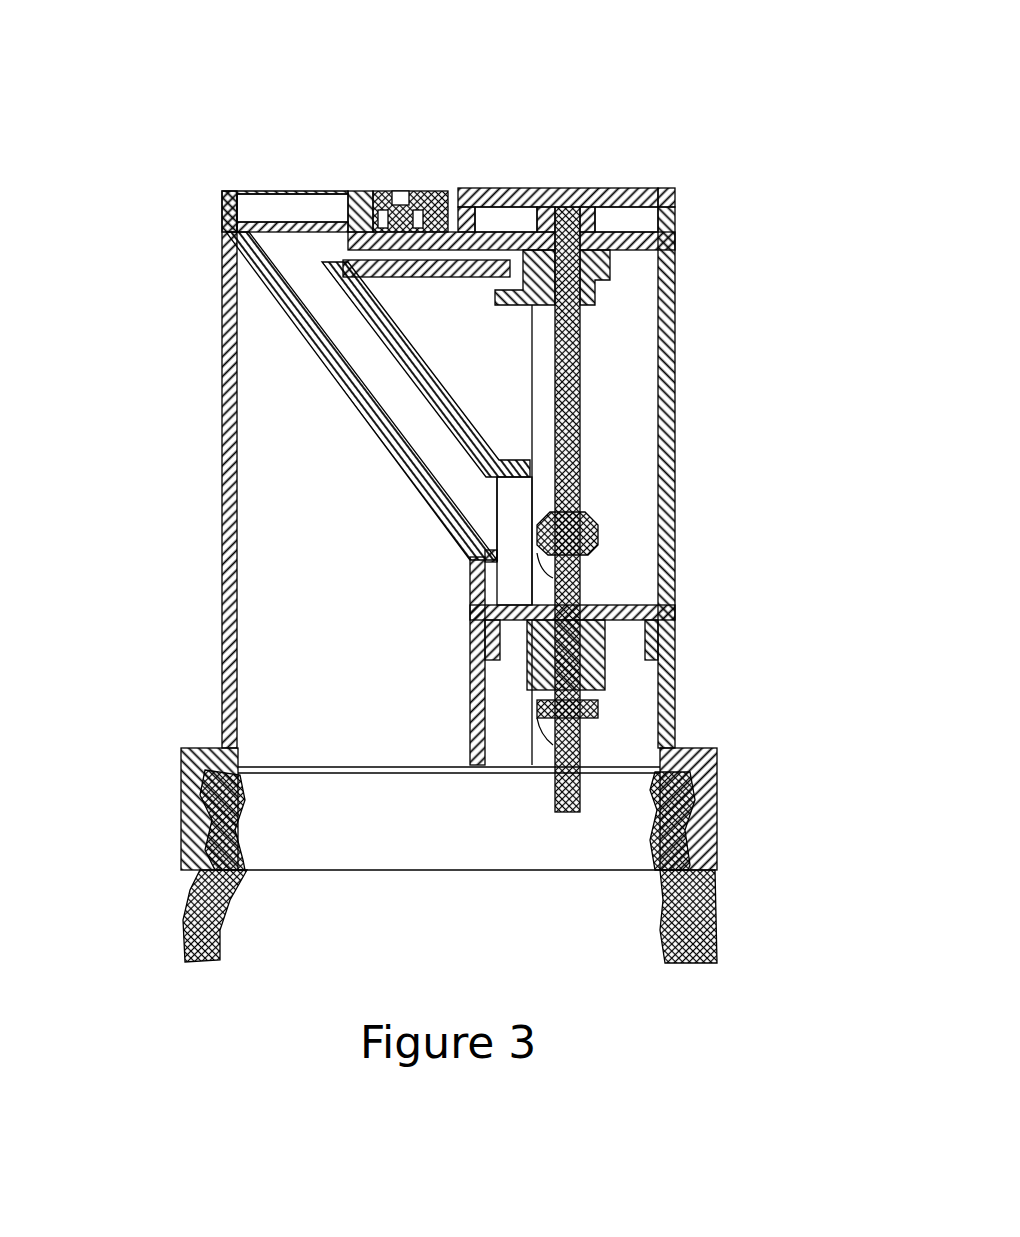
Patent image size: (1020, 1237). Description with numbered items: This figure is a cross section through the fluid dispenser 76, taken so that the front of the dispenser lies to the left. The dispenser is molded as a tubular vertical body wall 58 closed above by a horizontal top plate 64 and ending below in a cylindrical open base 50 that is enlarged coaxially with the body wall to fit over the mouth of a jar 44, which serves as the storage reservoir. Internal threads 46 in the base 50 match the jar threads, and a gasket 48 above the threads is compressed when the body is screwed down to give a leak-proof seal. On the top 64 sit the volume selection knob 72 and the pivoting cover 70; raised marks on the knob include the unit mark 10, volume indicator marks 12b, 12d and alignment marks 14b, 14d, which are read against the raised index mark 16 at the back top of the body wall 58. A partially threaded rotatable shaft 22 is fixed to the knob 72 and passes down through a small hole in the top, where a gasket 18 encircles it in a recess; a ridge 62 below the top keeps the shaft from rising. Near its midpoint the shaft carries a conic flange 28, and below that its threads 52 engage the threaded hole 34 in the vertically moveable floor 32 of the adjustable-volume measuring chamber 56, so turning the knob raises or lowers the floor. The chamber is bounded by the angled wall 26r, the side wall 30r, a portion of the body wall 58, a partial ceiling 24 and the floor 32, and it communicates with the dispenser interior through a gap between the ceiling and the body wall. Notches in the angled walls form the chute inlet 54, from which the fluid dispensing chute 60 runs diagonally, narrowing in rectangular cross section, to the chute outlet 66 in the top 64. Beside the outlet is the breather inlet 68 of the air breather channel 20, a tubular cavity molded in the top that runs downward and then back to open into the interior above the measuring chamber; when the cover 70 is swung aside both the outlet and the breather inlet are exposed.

The raised unit mark 10 is at (517, 188).
The volume indicator mark 12b is at (567, 190).
The volume indicator mark 12d is at (672, 155).
The alignment mark 14b is at (457, 190).
The alignment mark 14d is at (675, 190).
The raised index mark 16 is at (675, 258).
The gasket 18 is at (607, 268).
The air breather channel 20 is at (593, 280).
The rotatable shaft 22 is at (580, 412).
The partial ceiling 24 is at (580, 453).
The angled wall 26r is at (510, 498).
The conic shaped stop or flange 28 is at (597, 525).
The side wall 30r is at (633, 552).
The floor 32 is at (637, 605).
The threaded hole 34 is at (582, 778).
The jar 44 is at (717, 903).
The internal threads 46 is at (245, 872).
The gasket 48 is at (182, 820).
The cylindrical open base 50 is at (182, 762).
The threads 52 is at (540, 572).
The chute inlet 54 is at (493, 547).
The adjustable-volume measuring chamber 56 is at (460, 530).
The tubular vertical body wall 58 is at (237, 447).
The fluid dispensing chute 60 is at (325, 362).
The enlargement or ridge 62 is at (510, 318).
The horizontal top plate 64 is at (222, 232).
The chute outlet 66 is at (278, 243).
The breather inlet 68 is at (330, 222).
The cover 70 is at (343, 242).
The volume selection knob 72 is at (475, 188).
The fluid dispenser 76 is at (478, 118).